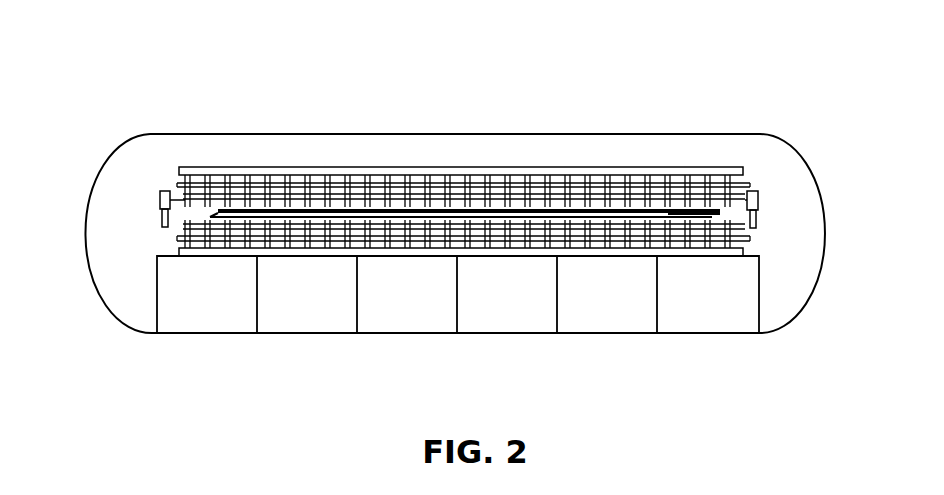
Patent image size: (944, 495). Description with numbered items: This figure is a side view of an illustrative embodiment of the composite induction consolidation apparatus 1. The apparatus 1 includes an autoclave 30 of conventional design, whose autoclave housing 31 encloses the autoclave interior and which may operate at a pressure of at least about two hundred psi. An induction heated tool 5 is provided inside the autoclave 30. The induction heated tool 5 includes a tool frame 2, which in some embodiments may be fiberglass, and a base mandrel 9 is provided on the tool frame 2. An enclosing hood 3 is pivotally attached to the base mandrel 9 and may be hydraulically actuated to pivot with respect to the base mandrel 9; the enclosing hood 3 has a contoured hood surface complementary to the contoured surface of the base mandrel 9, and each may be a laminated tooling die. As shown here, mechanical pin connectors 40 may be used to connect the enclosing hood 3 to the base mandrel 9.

The composite induction consolidation apparatus 1 is at (463, 200).
The tool frame 2 is at (463, 138).
The enclosing hood 3 is at (657, 192).
The induction heated tool 5 is at (363, 150).
The base mandrel 9 is at (528, 231).
The autoclave 30 is at (252, 127).
The autoclave housing 31 is at (740, 134).
The mechanical pin connectors 40 is at (160, 200).